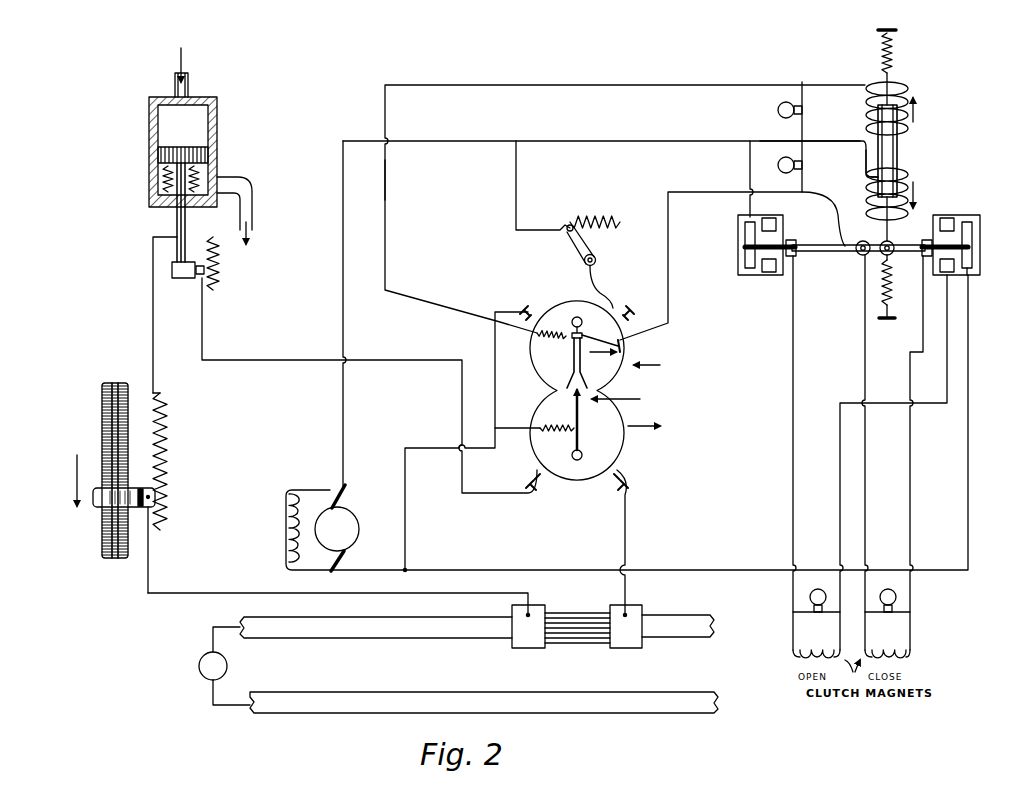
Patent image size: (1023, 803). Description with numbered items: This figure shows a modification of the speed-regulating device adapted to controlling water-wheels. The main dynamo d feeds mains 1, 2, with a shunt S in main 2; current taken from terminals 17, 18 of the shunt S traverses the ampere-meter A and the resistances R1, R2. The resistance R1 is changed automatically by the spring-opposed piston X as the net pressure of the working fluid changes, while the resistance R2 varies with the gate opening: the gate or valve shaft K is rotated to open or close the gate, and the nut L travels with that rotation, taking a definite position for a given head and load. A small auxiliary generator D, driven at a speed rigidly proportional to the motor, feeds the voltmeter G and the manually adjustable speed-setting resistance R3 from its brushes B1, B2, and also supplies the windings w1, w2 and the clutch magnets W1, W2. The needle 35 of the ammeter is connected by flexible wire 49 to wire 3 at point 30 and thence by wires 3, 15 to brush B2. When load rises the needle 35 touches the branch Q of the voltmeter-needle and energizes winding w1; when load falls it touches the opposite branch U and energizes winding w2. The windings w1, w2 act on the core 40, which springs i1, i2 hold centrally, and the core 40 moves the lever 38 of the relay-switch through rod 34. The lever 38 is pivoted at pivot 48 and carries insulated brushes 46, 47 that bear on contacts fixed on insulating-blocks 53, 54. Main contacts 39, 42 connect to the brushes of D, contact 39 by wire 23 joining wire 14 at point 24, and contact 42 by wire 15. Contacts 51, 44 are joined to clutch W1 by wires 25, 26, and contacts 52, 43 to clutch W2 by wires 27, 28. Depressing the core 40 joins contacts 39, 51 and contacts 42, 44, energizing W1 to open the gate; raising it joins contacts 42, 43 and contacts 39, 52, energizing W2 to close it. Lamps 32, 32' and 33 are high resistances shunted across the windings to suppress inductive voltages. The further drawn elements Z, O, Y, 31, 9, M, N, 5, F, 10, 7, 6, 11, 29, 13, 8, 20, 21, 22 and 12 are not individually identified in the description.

The admission pipe Z is at (175, 80).
The cylinder O is at (217, 102).
The spring-opposed piston X is at (158, 155).
The spring Y is at (200, 170).
The stationary main contact 42 is at (177, 218).
The discharge pipe 31 is at (252, 210).
The connecting link 9 is at (153, 262).
The block M is at (180, 278).
The shunt-circuit resistance R1 is at (225, 263).
The gate or valve shaft K is at (106, 525).
The nut L is at (98, 508).
The contact N is at (148, 488).
The gate-opening resistance R2 is at (171, 461).
The conductor 5 is at (148, 585).
The field coil F is at (284, 520).
The auxiliary generator D is at (337, 529).
The brush B1 is at (350, 497).
The brush B2 is at (346, 562).
The wire 14 is at (343, 141).
The conductor 10 is at (270, 360).
The wire 3 is at (405, 448).
The connection point 30 is at (495, 428).
The junction 7 is at (405, 570).
The wire 15 is at (345, 570).
The conductor 6 is at (625, 538).
The conductor 11 is at (432, 85).
The conductor 29 is at (385, 172).
The junction point 24 is at (750, 141).
The conductor 13 is at (820, 141).
The conductor 8 is at (866, 160).
The conductor 20 is at (516, 212).
The speed-adjusting resistance R3 is at (595, 210).
The lever 21 is at (592, 250).
The conductor 22 is at (592, 266).
The conductor 12 is at (668, 210).
The wire 23 is at (750, 205).
The high resistance lamp 32' is at (775, 137).
The high resistance lamp 32 is at (805, 164).
The spring i2 is at (892, 50).
The solenoid core 40 is at (897, 160).
The solenoid winding w2 is at (909, 108).
The solenoid winding w1 is at (907, 192).
The switch-lever 38 is at (815, 245).
The pivot 48 is at (858, 241).
The rod 34 is at (894, 245).
The spring i1 is at (893, 286).
The stationary main contact 39 is at (745, 270).
The fixed contact 51 is at (776, 220).
The fixed contact 52 is at (768, 272).
The insulating-block 53 is at (738, 243).
The brush 46 is at (786, 240).
The wire 25 is at (793, 300).
The fixed contact 43 is at (952, 216).
The fixed contact 44 is at (947, 278).
The brush 47 is at (980, 245).
The insulating-block 54 is at (980, 262).
The wire 28 is at (923, 300).
The wire 26 is at (947, 372).
The wire 27 is at (865, 355).
The clutch magnet winding W1 is at (796, 648).
The clutch magnet winding W2 is at (906, 648).
The high resistance lamp 33 is at (851, 615).
The ampere-meter A is at (595, 388).
The voltmeter-needle branch U is at (572, 352).
The voltmeter-needle branch Q is at (590, 340).
The voltmeter G is at (622, 346).
The needle 35 is at (575, 408).
The flexible wire 49 is at (557, 442).
The shunt terminal 17 is at (528, 626).
The shunt terminal 18 is at (626, 626).
The shunt S is at (577, 641).
The main 2 is at (477, 626).
The main 1 is at (484, 703).
The main dynamo d is at (199, 664).